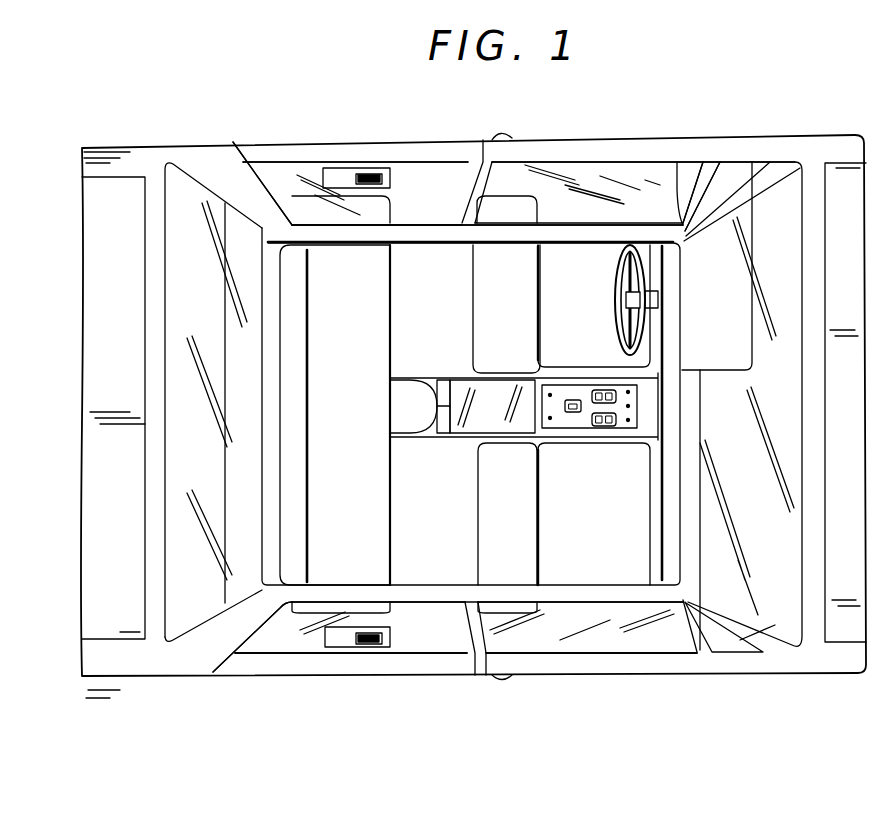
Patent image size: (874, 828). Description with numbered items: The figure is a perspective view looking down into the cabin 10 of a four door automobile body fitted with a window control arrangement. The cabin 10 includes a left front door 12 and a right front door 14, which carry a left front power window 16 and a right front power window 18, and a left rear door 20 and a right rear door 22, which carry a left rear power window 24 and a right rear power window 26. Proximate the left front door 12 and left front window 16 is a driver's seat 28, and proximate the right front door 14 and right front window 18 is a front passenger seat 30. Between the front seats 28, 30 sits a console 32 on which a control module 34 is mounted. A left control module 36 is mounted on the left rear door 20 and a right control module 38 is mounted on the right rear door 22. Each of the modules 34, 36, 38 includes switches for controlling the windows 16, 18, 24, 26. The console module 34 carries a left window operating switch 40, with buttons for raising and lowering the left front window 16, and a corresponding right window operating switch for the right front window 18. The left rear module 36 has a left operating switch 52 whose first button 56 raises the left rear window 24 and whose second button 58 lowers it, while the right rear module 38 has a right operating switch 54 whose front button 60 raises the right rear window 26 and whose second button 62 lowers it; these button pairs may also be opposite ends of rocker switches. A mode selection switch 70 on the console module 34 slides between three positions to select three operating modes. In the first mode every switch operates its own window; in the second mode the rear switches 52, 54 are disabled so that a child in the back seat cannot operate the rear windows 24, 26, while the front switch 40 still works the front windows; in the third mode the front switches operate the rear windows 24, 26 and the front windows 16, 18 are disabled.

The cabin 10 is at (781, 168).
The left front door 12 is at (684, 238).
The right front door 14 is at (560, 647).
The left front power window 16 is at (593, 170).
The right front power window 18 is at (591, 686).
The left rear door 20 is at (410, 192).
The right rear door 22 is at (268, 647).
The left rear power window 24 is at (405, 168).
The right rear power window 26 is at (343, 686).
The driver's seat 28 is at (583, 315).
The front passenger seat 30 is at (590, 539).
The console 32 is at (648, 403).
The control module 34 is at (350, 457).
The left control module 36 is at (320, 168).
The right control module 38 is at (320, 653).
The left window operating switch 40 is at (602, 390).
The left operating switch 52 is at (391, 178).
The right operating switch 54 is at (391, 634).
The first button 56 is at (375, 172).
The second button 58 is at (358, 176).
The front button 60 is at (383, 649).
The second button 62 is at (357, 647).
The mode selection switch 70 is at (570, 398).